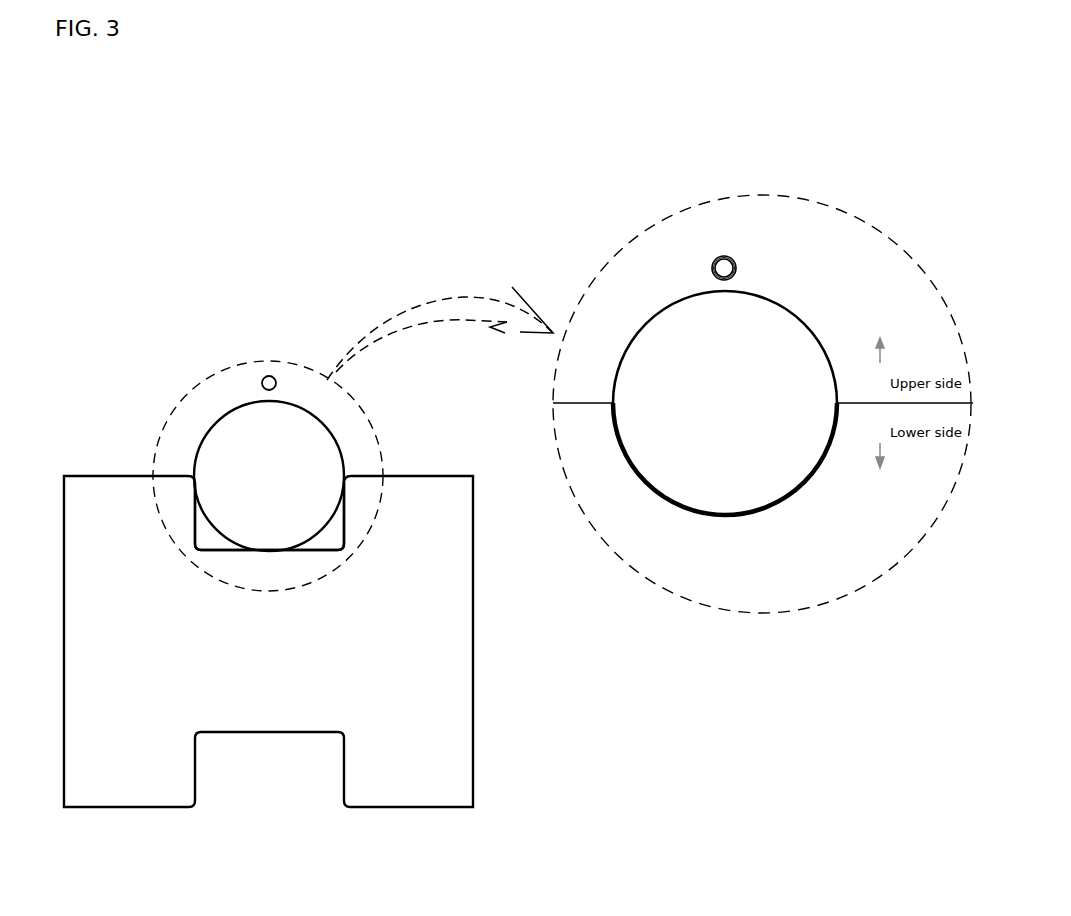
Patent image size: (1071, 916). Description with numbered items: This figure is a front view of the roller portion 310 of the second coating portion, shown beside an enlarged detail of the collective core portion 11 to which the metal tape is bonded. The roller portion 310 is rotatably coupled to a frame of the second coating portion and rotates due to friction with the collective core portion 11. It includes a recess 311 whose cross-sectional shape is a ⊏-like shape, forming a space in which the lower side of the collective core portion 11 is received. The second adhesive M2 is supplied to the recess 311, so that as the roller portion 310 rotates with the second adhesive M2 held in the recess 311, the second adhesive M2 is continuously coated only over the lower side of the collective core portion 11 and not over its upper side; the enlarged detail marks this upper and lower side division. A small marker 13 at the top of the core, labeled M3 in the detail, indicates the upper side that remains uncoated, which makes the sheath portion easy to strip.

The collective core portion 11 is at (213, 450).
The marker 13 is at (268, 372).
The roller portion 310 is at (450, 642).
The recess 311 is at (343, 520).
The second adhesive M2 is at (803, 488).
The marker position M3 is at (736, 258).